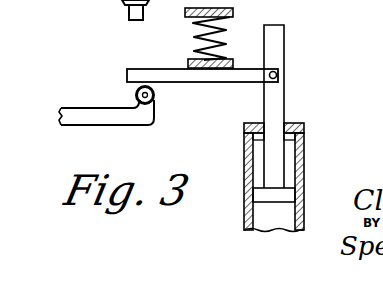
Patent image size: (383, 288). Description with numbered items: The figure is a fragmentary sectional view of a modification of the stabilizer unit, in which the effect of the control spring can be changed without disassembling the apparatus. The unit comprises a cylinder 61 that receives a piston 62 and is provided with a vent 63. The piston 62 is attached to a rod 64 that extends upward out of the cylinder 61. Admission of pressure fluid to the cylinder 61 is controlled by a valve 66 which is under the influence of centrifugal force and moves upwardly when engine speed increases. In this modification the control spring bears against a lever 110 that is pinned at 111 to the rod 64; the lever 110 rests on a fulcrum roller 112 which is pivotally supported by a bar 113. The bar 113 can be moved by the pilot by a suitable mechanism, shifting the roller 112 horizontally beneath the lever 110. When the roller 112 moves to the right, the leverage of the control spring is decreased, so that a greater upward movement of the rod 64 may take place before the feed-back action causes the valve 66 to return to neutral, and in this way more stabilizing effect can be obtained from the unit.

The cylinder 61 is at (305, 152).
The piston 62 is at (285, 195).
The vent 63 is at (245, 137).
The rod 64 is at (278, 43).
The valve 66 is at (186, 32).
The lever 110 is at (233, 84).
The pin 111 is at (277, 75).
The fulcrum roller 112 is at (135, 96).
The bar 113 is at (143, 115).